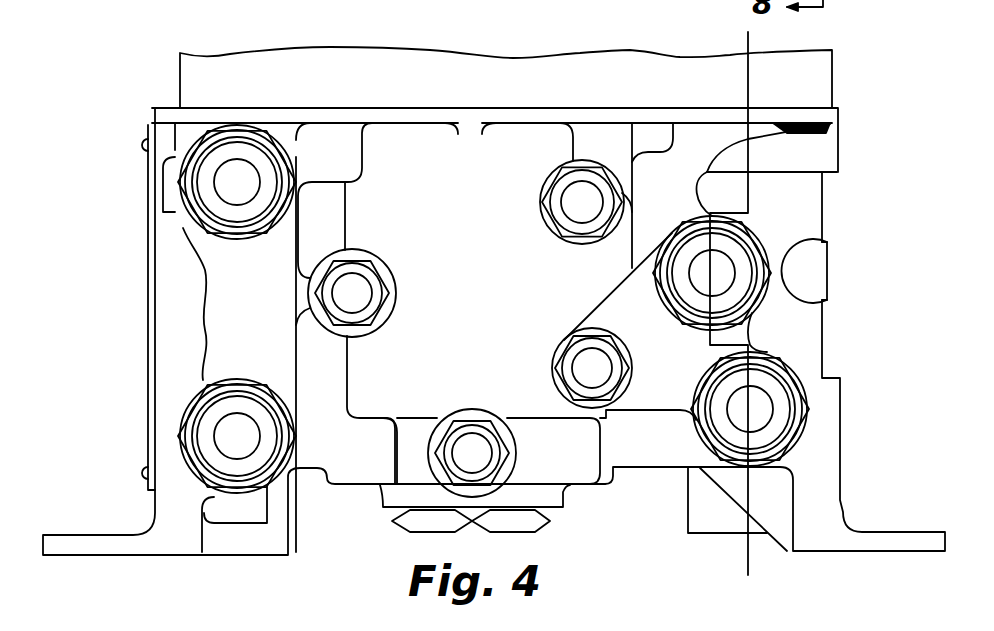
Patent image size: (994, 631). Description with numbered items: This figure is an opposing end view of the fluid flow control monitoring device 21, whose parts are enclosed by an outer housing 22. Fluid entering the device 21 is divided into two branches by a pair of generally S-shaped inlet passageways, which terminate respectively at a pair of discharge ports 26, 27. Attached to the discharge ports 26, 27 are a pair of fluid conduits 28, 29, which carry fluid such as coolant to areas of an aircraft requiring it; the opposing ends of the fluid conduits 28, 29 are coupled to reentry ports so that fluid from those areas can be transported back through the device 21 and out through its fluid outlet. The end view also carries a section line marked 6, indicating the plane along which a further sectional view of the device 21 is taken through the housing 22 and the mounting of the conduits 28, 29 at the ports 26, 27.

The fluid flow control monitoring device 21 is at (516, 57).
The outer housing 22 is at (497, 108).
The discharge port 26 is at (733, 413).
The discharge port 27 is at (700, 282).
The fluid conduit 28 is at (232, 425).
The fluid conduit 29 is at (237, 195).
The section line 6- 6 is at (748, 32).